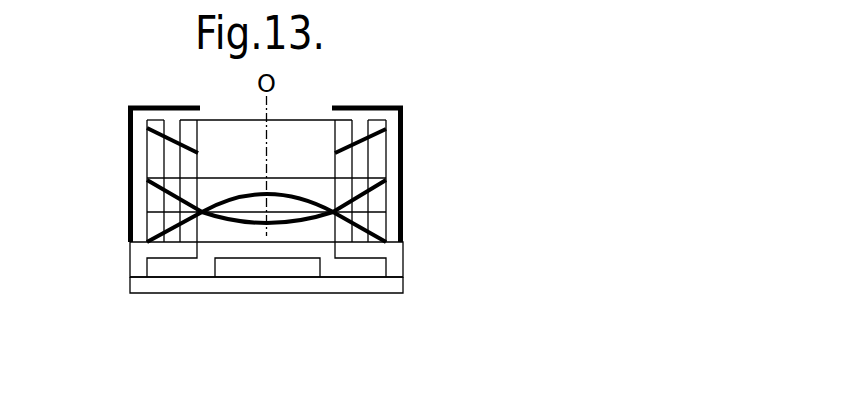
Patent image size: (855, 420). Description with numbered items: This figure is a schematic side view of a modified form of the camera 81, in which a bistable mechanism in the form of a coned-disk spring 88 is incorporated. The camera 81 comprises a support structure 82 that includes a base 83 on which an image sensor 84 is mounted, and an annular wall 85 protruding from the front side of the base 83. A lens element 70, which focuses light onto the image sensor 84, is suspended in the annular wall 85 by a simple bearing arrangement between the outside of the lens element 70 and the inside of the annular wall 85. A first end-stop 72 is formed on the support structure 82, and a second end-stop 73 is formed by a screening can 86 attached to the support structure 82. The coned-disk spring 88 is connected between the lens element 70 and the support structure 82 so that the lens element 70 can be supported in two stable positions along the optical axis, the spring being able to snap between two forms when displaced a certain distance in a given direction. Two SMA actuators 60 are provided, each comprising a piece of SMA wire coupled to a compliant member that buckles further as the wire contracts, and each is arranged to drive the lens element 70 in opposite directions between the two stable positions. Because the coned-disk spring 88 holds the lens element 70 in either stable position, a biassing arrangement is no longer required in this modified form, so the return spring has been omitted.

The SMA actuator 60 is at (285, 190).
The lens element 70 is at (185, 162).
The first end-stop 72 is at (188, 250).
The second end-stop 73 is at (366, 107).
The camera 81 is at (116, 201).
The support structure 82 is at (133, 261).
The base 83 is at (240, 283).
The image sensor 84 is at (280, 277).
The annular wall 85 is at (380, 205).
The screening can 86 is at (403, 122).
The coned-disk spring 88 is at (366, 148).